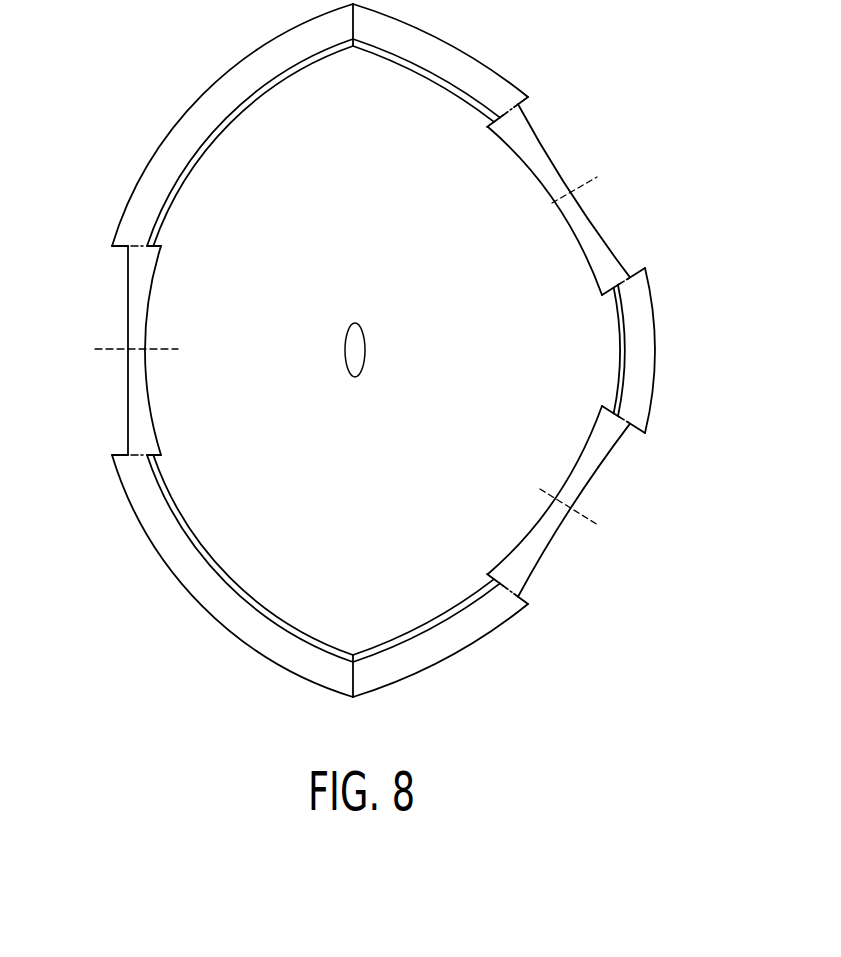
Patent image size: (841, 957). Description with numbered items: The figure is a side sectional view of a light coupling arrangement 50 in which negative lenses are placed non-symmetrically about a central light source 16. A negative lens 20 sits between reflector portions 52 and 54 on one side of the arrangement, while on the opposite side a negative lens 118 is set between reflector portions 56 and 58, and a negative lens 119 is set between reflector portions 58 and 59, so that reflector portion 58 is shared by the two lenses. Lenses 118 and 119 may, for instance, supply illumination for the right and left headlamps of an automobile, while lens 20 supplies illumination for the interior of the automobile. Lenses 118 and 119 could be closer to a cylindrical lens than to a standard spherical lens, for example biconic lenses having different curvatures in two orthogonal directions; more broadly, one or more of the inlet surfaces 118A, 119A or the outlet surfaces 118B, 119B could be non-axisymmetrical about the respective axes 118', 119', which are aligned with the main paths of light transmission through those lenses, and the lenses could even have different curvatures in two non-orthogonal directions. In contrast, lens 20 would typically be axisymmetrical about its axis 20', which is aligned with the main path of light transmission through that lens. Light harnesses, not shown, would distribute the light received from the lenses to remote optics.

The arrangement 50 is at (96, 31).
The reflector portion 52 is at (210, 90).
The reflector portion 54 is at (212, 608).
The reflector portion 56 is at (450, 55).
The reflector portion 58 is at (650, 330).
The reflector portion 59 is at (447, 647).
The light source 16 is at (353, 357).
The negative lens 20 is at (117, 350).
The axis 20' is at (160, 317).
The negative lens 118 is at (568, 192).
The inlet surface 118A is at (506, 142).
The outlet surface 118B is at (597, 230).
The axis 118' is at (555, 229).
The negative lens 119 is at (583, 497).
The inlet surface 119A is at (573, 470).
The outlet surface 119B is at (522, 575).
The axis 119' is at (532, 503).